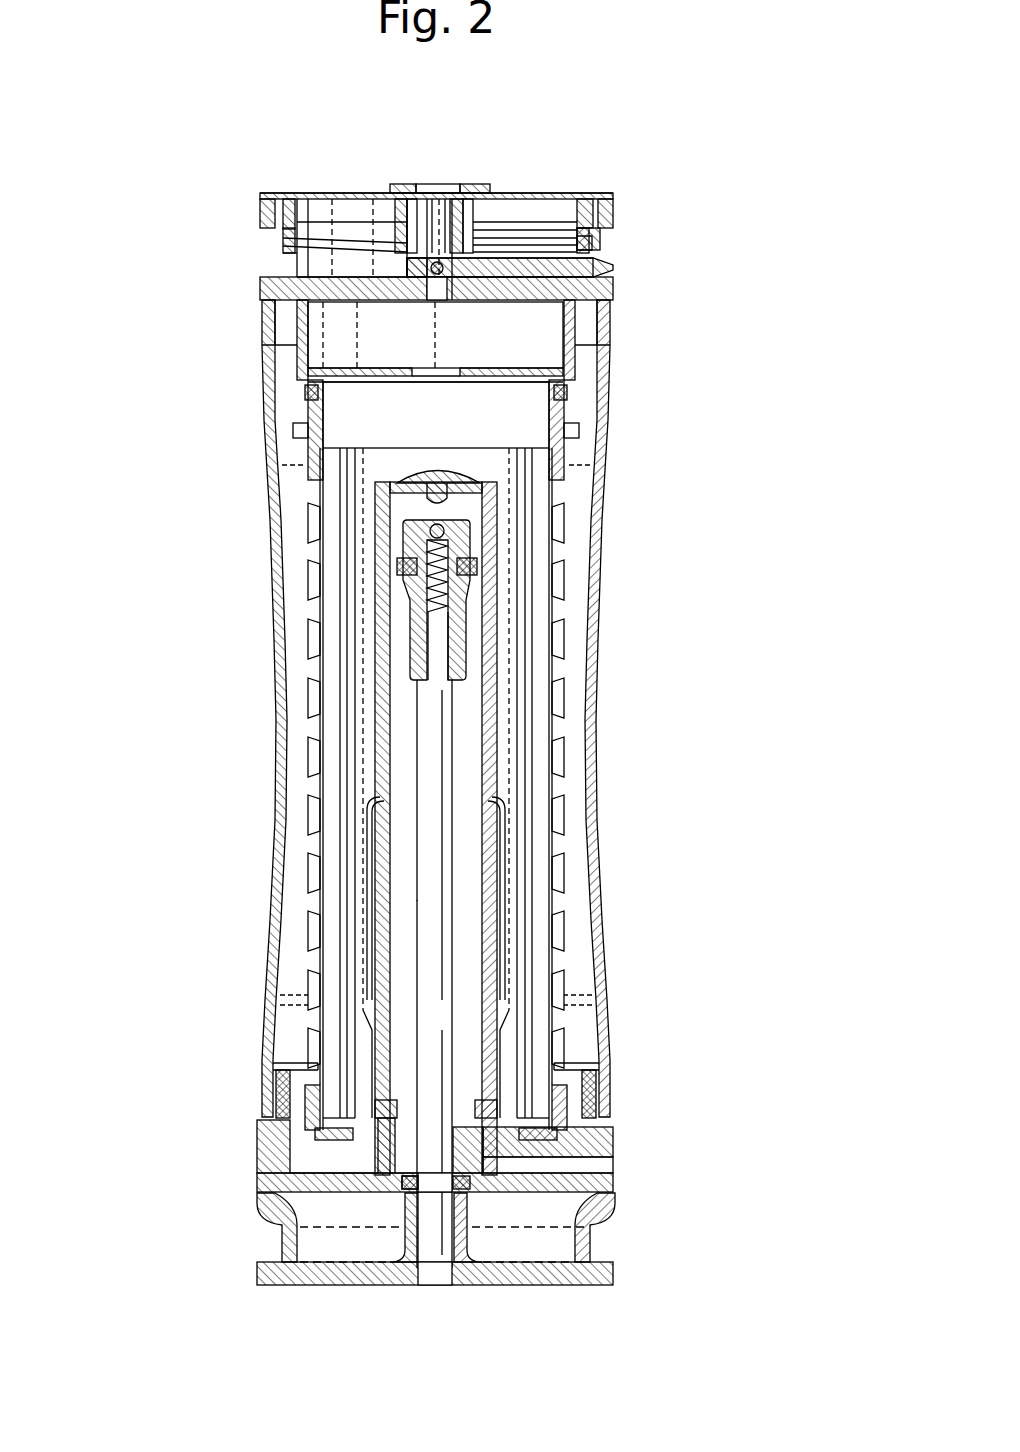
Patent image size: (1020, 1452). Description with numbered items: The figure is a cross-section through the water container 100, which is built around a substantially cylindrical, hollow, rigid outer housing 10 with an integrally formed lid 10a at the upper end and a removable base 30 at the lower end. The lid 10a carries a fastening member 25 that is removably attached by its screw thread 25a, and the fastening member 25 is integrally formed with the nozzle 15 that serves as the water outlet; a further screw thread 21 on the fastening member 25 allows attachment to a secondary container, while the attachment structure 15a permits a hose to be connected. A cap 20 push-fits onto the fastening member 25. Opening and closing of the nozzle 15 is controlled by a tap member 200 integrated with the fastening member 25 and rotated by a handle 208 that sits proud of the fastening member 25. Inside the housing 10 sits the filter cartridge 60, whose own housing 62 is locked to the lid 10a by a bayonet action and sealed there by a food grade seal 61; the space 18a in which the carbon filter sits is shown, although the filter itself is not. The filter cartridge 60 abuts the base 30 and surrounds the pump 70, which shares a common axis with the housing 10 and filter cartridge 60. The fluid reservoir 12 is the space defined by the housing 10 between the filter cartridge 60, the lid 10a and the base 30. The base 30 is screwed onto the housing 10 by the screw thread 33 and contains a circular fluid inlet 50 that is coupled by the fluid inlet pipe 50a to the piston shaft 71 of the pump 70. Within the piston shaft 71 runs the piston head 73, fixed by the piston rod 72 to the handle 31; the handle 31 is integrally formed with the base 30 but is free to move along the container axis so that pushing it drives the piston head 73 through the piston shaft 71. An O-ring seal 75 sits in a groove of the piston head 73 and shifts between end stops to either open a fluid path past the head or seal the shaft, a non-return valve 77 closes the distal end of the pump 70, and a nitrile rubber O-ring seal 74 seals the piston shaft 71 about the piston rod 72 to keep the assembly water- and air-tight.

The water container 100 is at (248, 156).
The nozzle 15 is at (438, 213).
The attachment structure 15a is at (400, 240).
The tap member 200 is at (513, 265).
The cap 20 is at (612, 208).
The screw thread 21 is at (565, 240).
The handle 208 is at (598, 268).
The fastening member 25 is at (285, 263).
The screw thread 25a is at (600, 292).
The lid 10a is at (276, 318).
The carbon filter space 18a is at (542, 343).
The food grade seal 61 is at (312, 394).
The non-return valve 77 is at (437, 472).
The filter cartridge 60 is at (552, 520).
The housing of the filter cartridge 62 is at (362, 508).
The O-ring seal 75 is at (400, 565).
The piston head 73 is at (462, 595).
The piston shaft 71 is at (385, 712).
The outer housing 10 is at (592, 715).
The pump 70 is at (415, 813).
The piston rod 72 is at (430, 874).
The fluid reservoir 12 is at (592, 960).
The screw thread 33 is at (605, 1082).
The fluid inlet 50 is at (612, 1163).
The fluid inlet pipe 50a is at (560, 1158).
The base 30 is at (282, 1237).
The handle 31 is at (605, 1272).
The seal 74 is at (405, 1190).